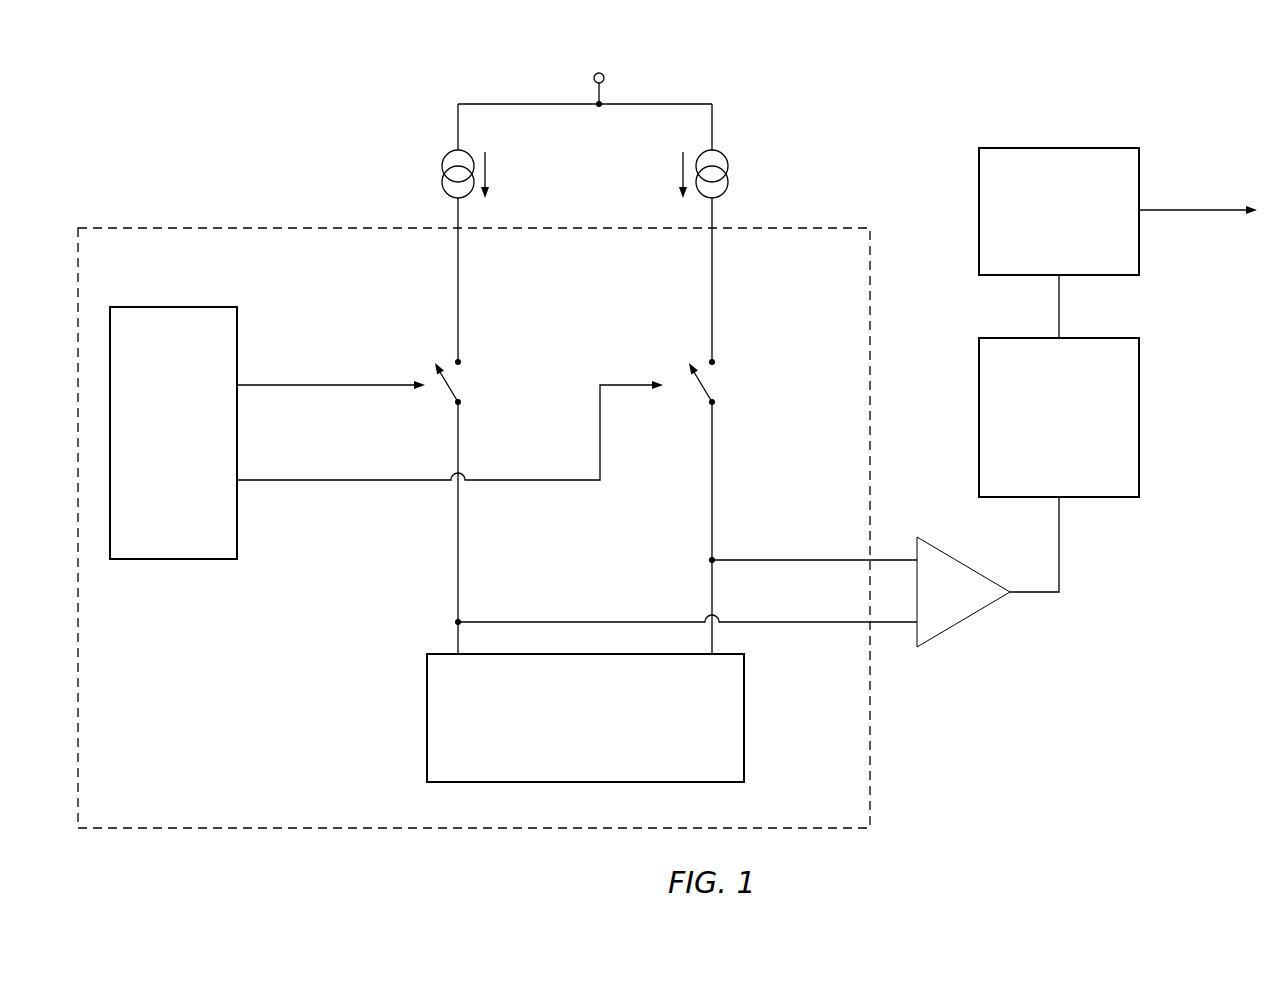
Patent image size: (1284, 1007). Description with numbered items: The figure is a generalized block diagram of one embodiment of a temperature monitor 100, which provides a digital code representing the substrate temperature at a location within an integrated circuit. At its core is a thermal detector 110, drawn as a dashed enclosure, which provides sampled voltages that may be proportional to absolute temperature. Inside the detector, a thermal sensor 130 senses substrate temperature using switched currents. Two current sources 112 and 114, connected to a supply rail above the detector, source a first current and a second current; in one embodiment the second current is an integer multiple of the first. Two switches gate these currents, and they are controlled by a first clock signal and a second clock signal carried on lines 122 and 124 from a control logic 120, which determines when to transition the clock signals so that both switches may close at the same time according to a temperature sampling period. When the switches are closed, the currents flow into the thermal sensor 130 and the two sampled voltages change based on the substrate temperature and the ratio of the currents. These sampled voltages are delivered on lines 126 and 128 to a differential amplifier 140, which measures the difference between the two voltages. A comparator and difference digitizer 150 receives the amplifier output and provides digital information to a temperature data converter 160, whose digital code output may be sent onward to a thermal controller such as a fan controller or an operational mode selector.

The temperature monitor 100 is at (405, 73).
The thermal detector 110 is at (497, 513).
The current source 112 is at (727, 157).
The current source 114 is at (443, 188).
The control logic 120 is at (173, 433).
The line 122 is at (245, 480).
The line 124 is at (270, 385).
The line 126 is at (752, 560).
The line 128 is at (783, 623).
The thermal sensor 130 is at (585, 718).
The differential amplifier 140 is at (955, 622).
The comparator and difference digitizer 150 is at (1059, 417).
The temperature data converter 160 is at (1059, 211).